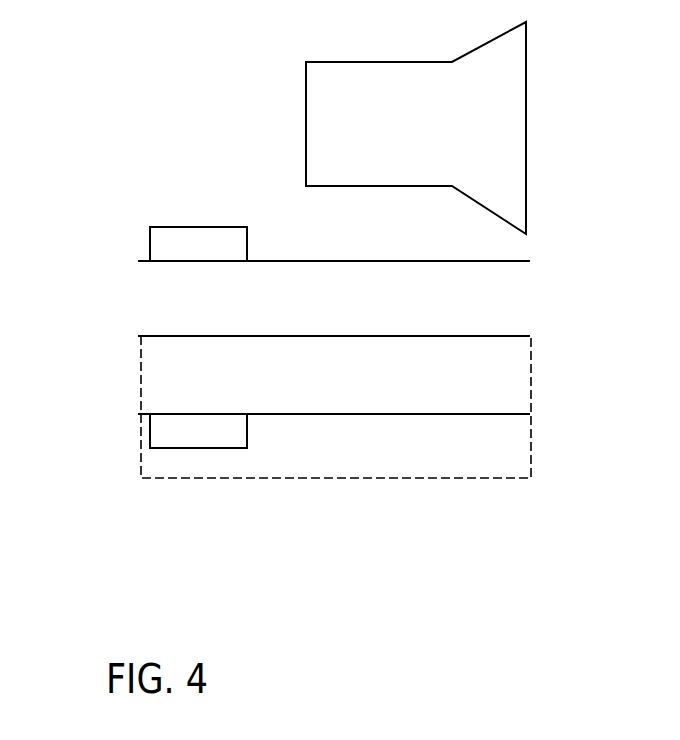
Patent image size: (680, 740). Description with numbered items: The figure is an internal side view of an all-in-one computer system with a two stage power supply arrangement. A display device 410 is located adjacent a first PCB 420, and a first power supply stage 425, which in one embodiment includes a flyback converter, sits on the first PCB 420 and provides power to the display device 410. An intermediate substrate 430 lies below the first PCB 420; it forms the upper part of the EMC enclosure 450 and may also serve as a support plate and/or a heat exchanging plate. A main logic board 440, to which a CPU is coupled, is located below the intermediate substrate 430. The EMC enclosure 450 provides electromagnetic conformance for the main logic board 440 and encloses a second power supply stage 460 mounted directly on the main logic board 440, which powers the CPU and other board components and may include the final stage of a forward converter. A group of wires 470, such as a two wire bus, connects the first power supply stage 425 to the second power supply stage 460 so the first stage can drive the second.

The display device 410 is at (395, 132).
The first PCB 420 is at (512, 262).
The first power supply stage 425 is at (218, 252).
The intermediate substrate 430 is at (512, 337).
The main logic board 440 is at (511, 413).
The EMC enclosure 450 is at (512, 478).
The second power supply stage 460 is at (218, 442).
The group of wires 470 is at (150, 249).